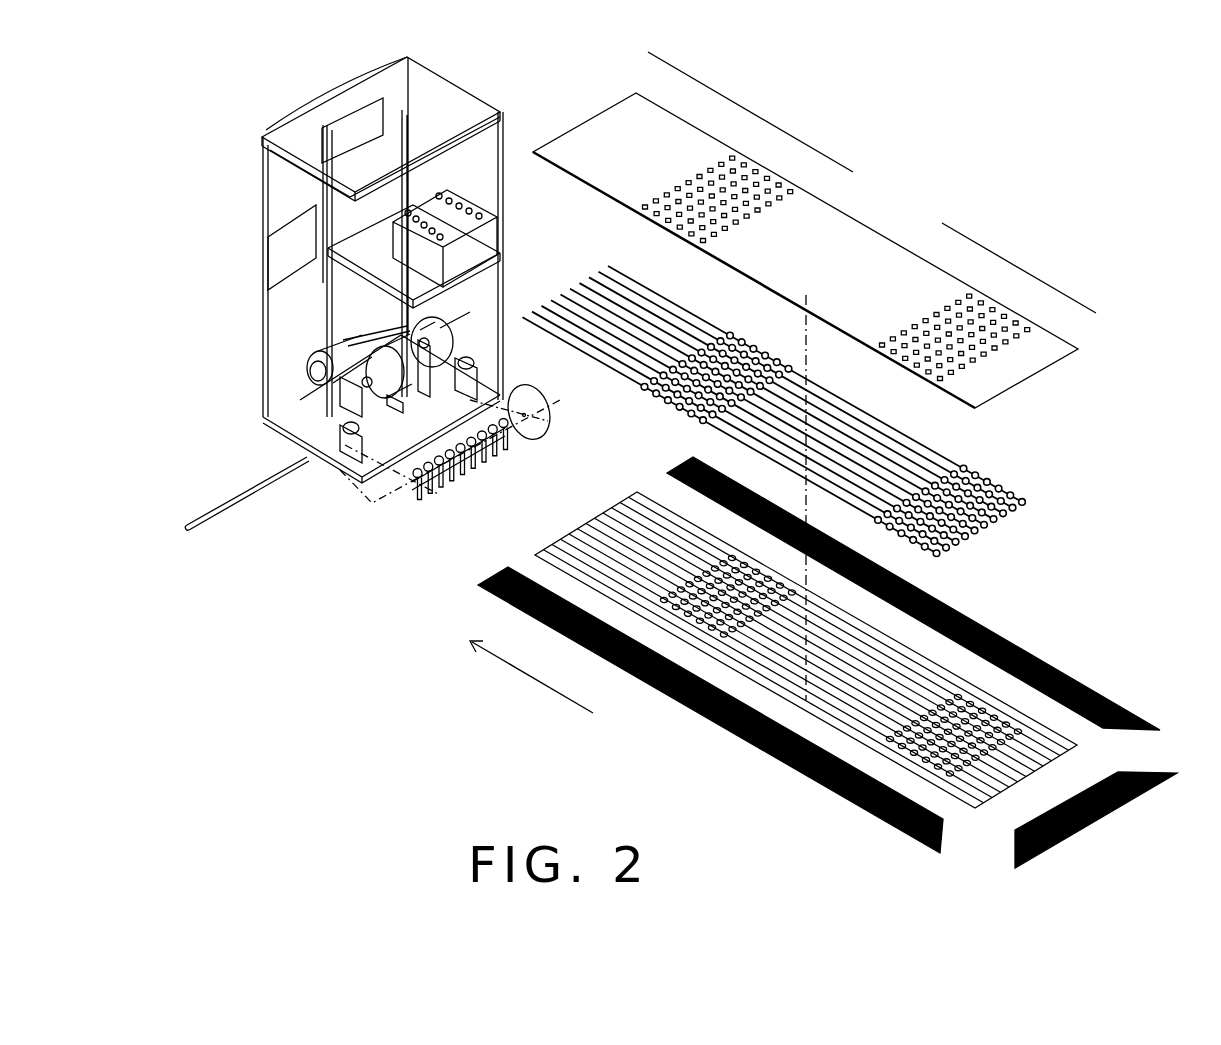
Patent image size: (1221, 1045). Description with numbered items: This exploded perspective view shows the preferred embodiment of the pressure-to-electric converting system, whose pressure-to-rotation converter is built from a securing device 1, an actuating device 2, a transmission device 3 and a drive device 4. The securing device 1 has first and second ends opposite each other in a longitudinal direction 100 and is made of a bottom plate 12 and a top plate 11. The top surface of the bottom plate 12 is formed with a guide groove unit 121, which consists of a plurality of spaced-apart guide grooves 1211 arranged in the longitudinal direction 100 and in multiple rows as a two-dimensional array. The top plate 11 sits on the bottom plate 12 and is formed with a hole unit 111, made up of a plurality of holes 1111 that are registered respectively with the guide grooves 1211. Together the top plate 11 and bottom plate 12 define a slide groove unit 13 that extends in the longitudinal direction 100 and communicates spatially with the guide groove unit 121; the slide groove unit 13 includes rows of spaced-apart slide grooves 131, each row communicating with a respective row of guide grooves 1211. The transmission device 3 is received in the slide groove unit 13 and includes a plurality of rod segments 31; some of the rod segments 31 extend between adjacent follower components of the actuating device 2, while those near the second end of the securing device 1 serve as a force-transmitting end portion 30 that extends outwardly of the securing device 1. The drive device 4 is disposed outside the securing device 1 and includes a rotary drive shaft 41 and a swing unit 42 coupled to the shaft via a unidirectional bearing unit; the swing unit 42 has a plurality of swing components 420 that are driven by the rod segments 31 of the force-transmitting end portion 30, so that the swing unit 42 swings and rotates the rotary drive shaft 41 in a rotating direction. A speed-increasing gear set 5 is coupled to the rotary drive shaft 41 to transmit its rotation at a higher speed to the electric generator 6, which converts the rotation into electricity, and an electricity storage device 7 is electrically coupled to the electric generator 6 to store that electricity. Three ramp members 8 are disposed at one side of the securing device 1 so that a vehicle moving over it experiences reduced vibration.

The securing device 1 is at (1082, 304).
The top plate 11 is at (1043, 340).
The hole unit 111 is at (1028, 222).
The holes 1111 is at (790, 193).
The bottom plate 12 is at (1062, 749).
The guide groove unit 121 is at (972, 846).
The guide grooves 1211 is at (903, 750).
The slide groove unit 13 is at (1060, 597).
The slide grooves 131 is at (898, 667).
The actuating device 2 is at (1027, 508).
The transmission device 3 is at (845, 387).
The force-transmitting end portion 30 is at (600, 255).
The rod segments 31 is at (698, 340).
The drive device 4 is at (318, 515).
The rotary drive shaft 41 is at (233, 500).
The swing unit 42 is at (515, 528).
The swing components 420 is at (422, 500).
The speed-increasing gear set 5 is at (460, 333).
The electric generator 6 is at (356, 403).
The electricity storage device 7 is at (466, 205).
The ramp member 8 is at (1133, 726).
The longitudinal direction 100 is at (530, 678).